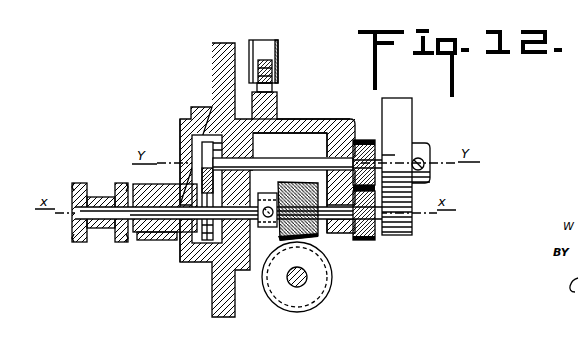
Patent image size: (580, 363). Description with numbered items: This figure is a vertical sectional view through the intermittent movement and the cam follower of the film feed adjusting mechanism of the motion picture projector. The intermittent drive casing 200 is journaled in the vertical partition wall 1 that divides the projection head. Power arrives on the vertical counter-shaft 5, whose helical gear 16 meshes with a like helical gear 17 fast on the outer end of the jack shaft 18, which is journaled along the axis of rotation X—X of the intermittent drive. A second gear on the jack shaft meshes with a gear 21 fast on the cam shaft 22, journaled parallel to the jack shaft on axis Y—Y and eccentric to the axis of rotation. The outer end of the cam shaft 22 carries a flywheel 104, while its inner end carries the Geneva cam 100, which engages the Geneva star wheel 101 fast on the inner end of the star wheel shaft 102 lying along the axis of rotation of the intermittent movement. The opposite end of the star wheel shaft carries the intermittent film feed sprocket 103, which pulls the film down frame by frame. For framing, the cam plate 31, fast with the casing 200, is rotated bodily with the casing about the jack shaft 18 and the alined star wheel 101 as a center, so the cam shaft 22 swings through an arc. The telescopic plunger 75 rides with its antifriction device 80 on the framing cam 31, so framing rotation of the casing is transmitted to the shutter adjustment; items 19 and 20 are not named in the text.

The vertical partition wall 1 is at (212, 61).
The vertical counter-shaft 5 is at (293, 285).
The helical gear 16 is at (312, 292).
The helical gear 17 is at (318, 240).
The jack shaft 18 is at (347, 232).
The drive assembly 19 is at (302, 71).
The sleeve end 20 is at (368, 240).
The gear 21 is at (365, 140).
The cam shaft 22 is at (317, 160).
The cam plate 31 is at (278, 91).
The plunger 75 is at (279, 50).
The antifriction device 80 is at (263, 72).
The Geneva cam 100 is at (180, 138).
The Geneva star wheel 101 is at (207, 263).
The star wheel shaft 102 is at (163, 222).
The intermittent film feed sprocket 103 is at (75, 240).
The flywheel 104 is at (402, 116).
The intermittent drive casing 200 is at (333, 119).